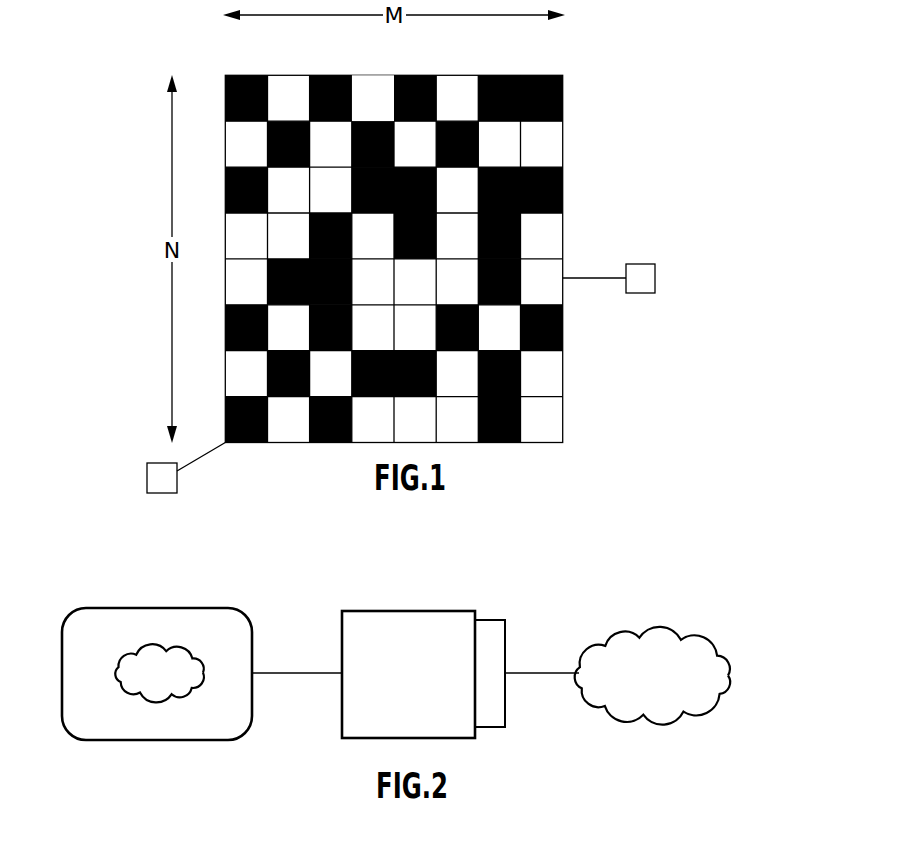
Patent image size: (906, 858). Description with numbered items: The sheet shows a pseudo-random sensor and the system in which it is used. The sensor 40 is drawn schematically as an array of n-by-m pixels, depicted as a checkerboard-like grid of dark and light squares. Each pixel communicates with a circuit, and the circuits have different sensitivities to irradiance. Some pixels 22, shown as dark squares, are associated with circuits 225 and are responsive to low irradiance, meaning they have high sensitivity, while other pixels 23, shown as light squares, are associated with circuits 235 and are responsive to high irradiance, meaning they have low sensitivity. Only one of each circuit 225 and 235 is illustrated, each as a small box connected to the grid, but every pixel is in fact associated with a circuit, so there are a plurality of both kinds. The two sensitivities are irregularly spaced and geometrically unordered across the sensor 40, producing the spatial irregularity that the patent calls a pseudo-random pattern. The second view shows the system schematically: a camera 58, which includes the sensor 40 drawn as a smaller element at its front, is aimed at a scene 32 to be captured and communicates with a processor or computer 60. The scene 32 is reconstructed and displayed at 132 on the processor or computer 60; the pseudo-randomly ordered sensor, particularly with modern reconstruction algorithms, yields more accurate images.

In FIG. 1, the pixels 22 is at (247, 75).
In FIG. 1, the pixels 23 is at (372, 92).
In FIG. 1, the sensor 40 is at (616, 116).
In FIG. 2, the sensor 40 is at (505, 620).
In FIG. 1, the circuits 225 is at (160, 478).
In FIG. 1, the circuits 235 is at (645, 280).
In FIG. 2, the processor or computer 60 is at (155, 608).
In FIG. 2, the reconstructed scene 132 is at (167, 697).
In FIG. 2, the camera 58 is at (360, 732).
In FIG. 2, the scene 32 is at (713, 637).